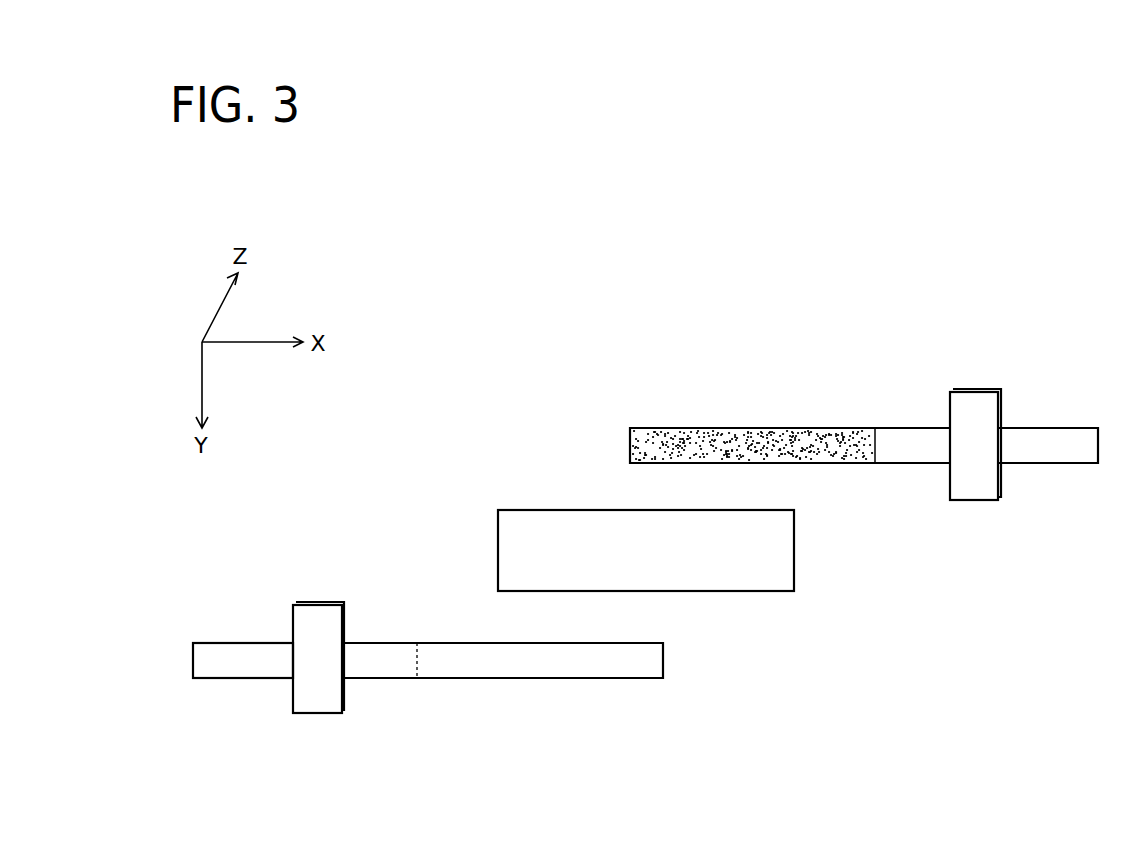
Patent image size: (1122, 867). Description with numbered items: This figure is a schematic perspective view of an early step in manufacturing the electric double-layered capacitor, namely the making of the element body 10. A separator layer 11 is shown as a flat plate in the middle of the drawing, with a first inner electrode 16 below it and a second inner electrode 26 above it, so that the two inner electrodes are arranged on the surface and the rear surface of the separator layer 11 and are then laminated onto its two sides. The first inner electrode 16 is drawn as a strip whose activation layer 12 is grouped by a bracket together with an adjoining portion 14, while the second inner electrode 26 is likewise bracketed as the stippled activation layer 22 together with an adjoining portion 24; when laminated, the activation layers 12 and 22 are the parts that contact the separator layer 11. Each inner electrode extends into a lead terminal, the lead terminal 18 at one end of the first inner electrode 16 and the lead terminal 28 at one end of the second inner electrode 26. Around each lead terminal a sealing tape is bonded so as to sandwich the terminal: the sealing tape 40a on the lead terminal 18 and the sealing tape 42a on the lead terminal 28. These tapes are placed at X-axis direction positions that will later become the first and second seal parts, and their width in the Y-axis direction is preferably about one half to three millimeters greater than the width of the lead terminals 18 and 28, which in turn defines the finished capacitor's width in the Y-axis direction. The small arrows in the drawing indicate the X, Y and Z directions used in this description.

The element body 10 is at (892, 671).
The separator layer 11 is at (757, 567).
The activation layer 12 is at (602, 670).
The layer 14 is at (523, 655).
The first inner electrode 16 is at (498, 755).
The lead terminal 18 is at (222, 660).
The activation layer 22 is at (758, 443).
The base portion 24 is at (897, 440).
The second inner electrode 26 is at (738, 333).
The lead terminal 28 is at (1068, 447).
The sealing tape 40a is at (317, 618).
The sealing tape 42a is at (1003, 403).